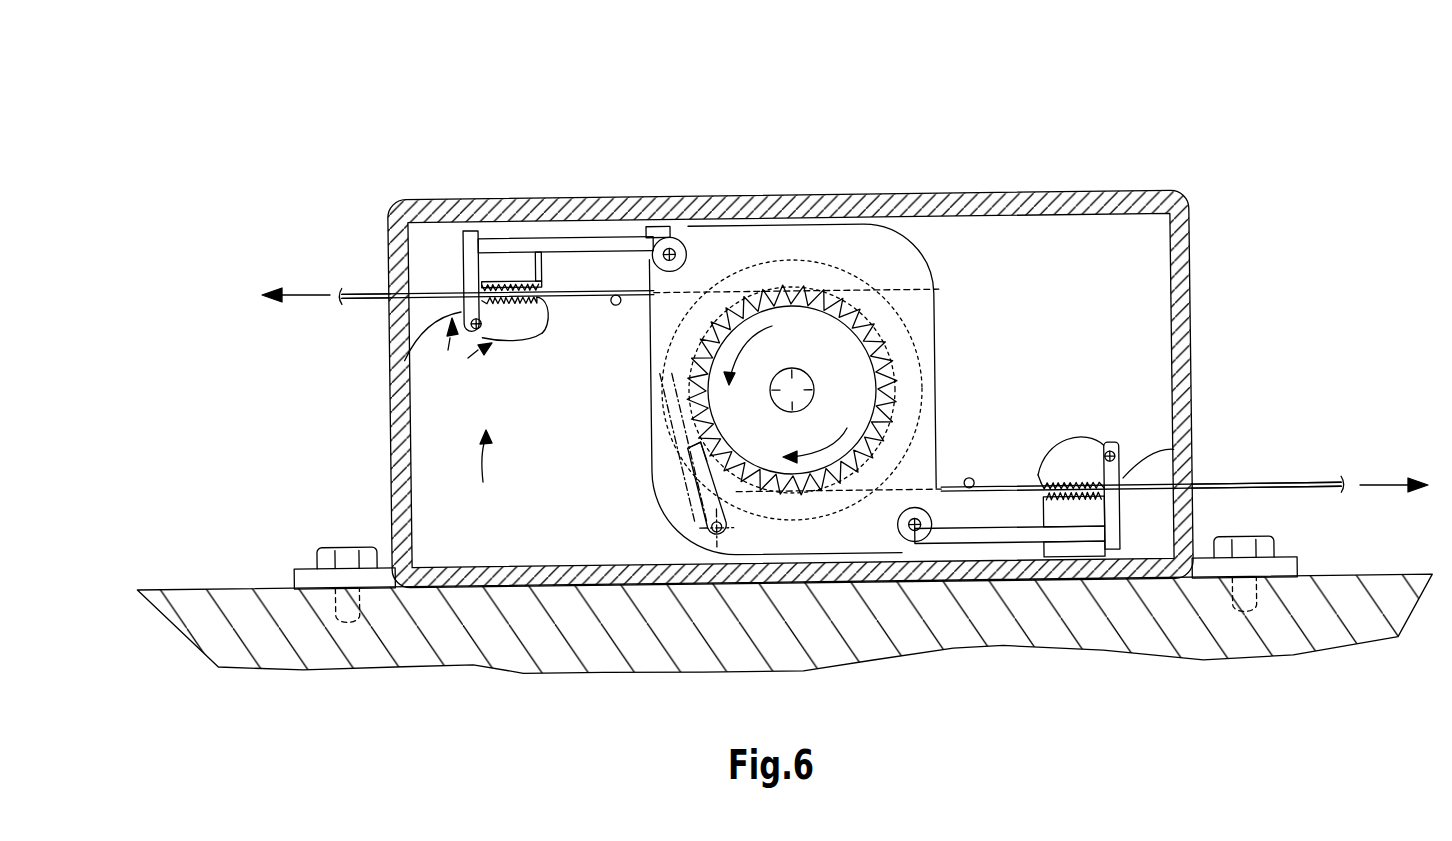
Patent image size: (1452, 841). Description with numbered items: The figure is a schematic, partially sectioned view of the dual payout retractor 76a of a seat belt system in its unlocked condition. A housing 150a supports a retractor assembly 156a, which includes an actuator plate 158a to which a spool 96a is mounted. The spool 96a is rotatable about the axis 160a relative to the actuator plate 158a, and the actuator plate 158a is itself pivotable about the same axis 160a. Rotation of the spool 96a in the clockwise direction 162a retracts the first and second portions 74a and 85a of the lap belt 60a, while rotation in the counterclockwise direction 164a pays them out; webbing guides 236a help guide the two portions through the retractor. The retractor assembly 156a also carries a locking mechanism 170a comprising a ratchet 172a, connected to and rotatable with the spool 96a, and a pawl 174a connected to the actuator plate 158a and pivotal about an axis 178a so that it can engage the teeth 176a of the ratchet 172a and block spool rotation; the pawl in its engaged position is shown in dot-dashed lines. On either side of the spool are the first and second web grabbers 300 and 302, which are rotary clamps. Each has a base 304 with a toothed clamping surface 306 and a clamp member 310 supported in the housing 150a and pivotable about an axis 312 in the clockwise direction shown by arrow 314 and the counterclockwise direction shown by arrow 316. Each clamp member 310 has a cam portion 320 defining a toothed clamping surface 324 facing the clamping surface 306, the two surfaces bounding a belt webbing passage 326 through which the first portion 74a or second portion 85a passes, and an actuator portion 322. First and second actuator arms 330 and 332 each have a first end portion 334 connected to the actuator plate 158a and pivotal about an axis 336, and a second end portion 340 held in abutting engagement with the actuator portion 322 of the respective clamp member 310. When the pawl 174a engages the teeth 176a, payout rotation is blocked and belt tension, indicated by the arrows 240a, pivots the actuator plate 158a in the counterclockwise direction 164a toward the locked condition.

The dual payout retractor 76a is at (455, 128).
The housing 150a is at (865, 198).
The base 304 is at (442, 235).
The retractor assembly 156a is at (875, 389).
The actuator plate 158a is at (905, 276).
The spool 96a is at (940, 295).
The lap belt 60a is at (940, 325).
The axis 160a is at (796, 387).
The clockwise direction 162a is at (824, 430).
The counterclockwise direction 164a is at (752, 340).
The locking mechanism 170a is at (688, 555).
The ratchet 172a is at (697, 390).
The pawl 174a is at (698, 487).
The teeth 176a is at (703, 437).
The axis 178a is at (722, 530).
The clamping surface 306 is at (445, 300).
The second portion 85a is at (366, 293).
The first portion 74a is at (1295, 483).
The arrows 240a is at (288, 296).
The second web grabber 302 is at (500, 470).
The first web grabber 300 is at (1085, 494).
The first actuator arm 330 is at (997, 537).
The second actuator arm 332 is at (583, 245).
The second end portion 340 is at (495, 248).
The belt webbing passage 326 is at (540, 250).
The first end portion 334 is at (666, 238).
The axis 336 is at (676, 250).
The actuator portion 322 is at (463, 238).
The axis 312 is at (472, 335).
The clamp member 310 is at (537, 343).
The arrow 314 is at (537, 327).
The clamping surface 324 is at (540, 298).
The cam portion 320 is at (510, 340).
The arrow 316 is at (405, 360).
The webbing guides 236a is at (617, 295).